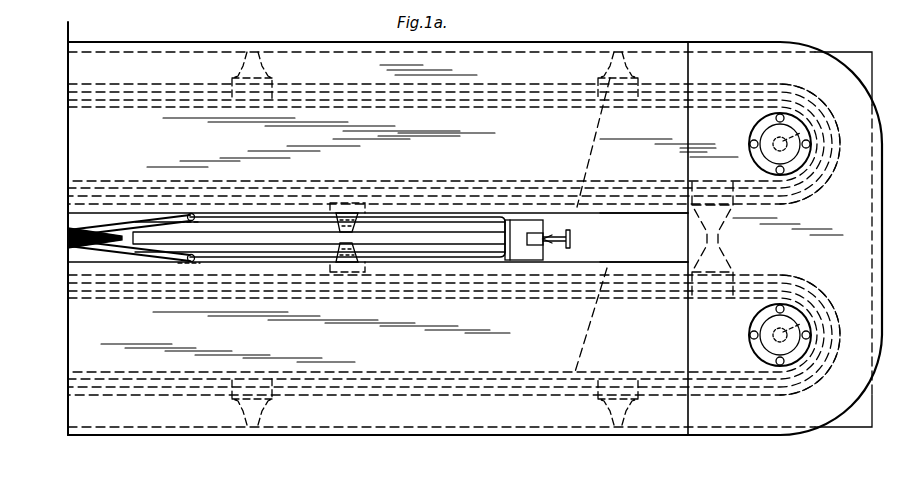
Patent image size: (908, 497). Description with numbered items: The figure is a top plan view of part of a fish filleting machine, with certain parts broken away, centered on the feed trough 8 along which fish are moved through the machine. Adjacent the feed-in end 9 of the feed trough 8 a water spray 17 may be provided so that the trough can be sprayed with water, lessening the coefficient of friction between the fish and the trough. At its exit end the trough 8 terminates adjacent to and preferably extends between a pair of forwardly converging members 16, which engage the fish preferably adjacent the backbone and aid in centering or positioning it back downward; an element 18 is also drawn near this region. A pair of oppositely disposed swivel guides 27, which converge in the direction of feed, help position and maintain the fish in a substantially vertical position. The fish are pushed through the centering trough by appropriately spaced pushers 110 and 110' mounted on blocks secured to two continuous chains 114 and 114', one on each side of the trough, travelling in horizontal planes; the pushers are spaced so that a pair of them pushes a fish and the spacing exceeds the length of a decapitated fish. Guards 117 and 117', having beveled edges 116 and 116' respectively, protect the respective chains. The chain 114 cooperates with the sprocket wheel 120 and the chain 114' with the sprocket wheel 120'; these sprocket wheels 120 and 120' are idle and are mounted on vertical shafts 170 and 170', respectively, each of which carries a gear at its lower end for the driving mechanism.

The feed trough 8 is at (447, 215).
The feed-in end 9 is at (498, 219).
The forwardly converging members 16 is at (68, 240).
The water spray 17 is at (553, 237).
The pivot 18 is at (190, 256).
The swivel guides 27 is at (143, 214).
The pushers 110 is at (297, 162).
The cam lobe 110' is at (252, 401).
The continuous chain 114 is at (593, 142).
The continuous chain 114' is at (589, 320).
The beveled edge 116 is at (644, 222).
The beveled edge 116' is at (644, 255).
The guard 117 is at (594, 60).
The guard 117' is at (632, 418).
The sprocket wheel 120 is at (754, 144).
The sprocket wheel 120' is at (753, 335).
The vertical shaft 170 is at (826, 144).
The vertical shaft 170' is at (819, 335).